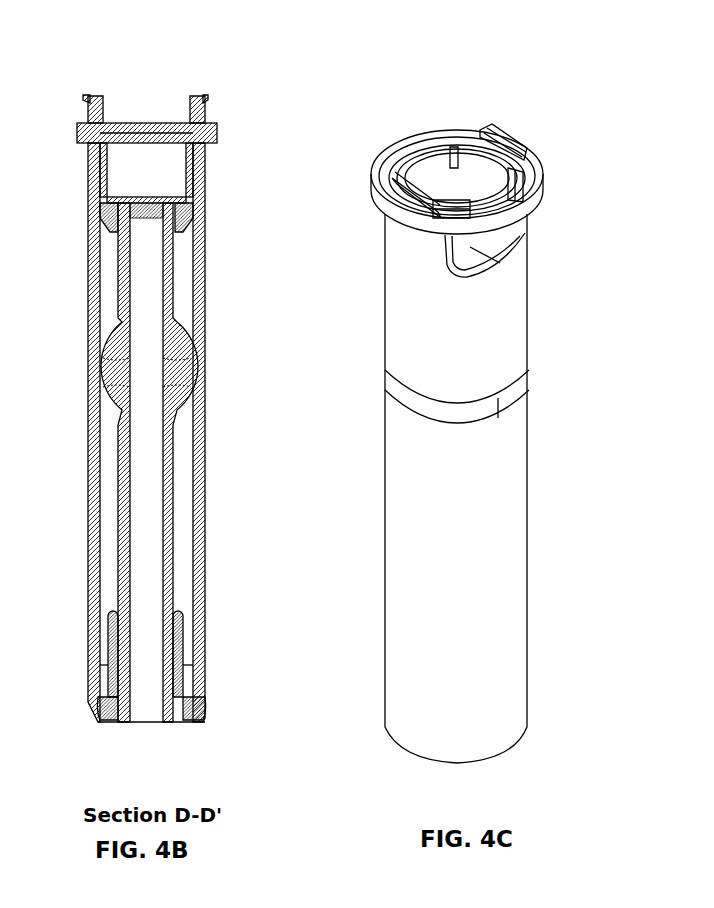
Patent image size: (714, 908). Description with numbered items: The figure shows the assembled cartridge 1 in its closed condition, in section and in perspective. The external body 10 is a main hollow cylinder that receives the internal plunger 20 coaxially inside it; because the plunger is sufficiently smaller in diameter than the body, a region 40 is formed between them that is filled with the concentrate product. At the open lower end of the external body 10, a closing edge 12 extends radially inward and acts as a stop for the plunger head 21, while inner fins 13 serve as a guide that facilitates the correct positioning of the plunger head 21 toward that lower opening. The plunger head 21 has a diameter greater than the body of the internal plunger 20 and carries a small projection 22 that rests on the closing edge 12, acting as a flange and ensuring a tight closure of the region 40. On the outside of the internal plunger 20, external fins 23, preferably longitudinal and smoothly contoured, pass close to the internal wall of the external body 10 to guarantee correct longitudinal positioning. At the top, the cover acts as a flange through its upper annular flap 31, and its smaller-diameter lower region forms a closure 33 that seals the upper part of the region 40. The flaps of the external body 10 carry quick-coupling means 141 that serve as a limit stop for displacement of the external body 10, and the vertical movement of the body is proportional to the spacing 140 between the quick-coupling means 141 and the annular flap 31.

In FIG. 4C, the cartridge 1 is at (473, 113).
In FIG. 4B, the external body 10 is at (90, 428).
In FIG. 4B, the closing edge 12 is at (190, 707).
In FIG. 4B, the inner fins 13 is at (180, 623).
In FIG. 4B, the internal plunger 20 is at (163, 548).
In FIG. 4B, the plunger head 21 is at (117, 722).
In FIG. 4B, the small projection 22 is at (110, 700).
In FIG. 4B, the external fins 23 is at (175, 347).
In FIG. 4B, the upper annular flap 31 is at (218, 135).
In FIG. 4B, the closure 33 is at (198, 202).
In FIG. 4B, the region 40 is at (195, 315).
In FIG. 4B, the spacing 140 is at (207, 98).
In FIG. 4B, the quick-coupling means 141 is at (205, 87).